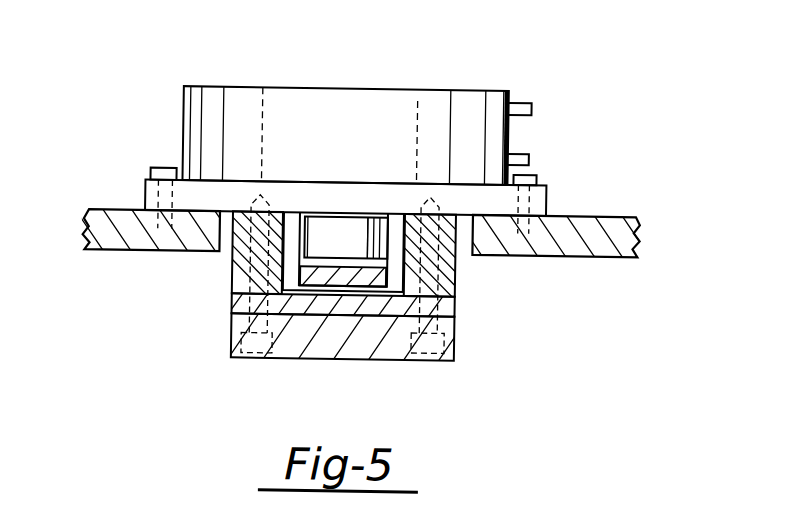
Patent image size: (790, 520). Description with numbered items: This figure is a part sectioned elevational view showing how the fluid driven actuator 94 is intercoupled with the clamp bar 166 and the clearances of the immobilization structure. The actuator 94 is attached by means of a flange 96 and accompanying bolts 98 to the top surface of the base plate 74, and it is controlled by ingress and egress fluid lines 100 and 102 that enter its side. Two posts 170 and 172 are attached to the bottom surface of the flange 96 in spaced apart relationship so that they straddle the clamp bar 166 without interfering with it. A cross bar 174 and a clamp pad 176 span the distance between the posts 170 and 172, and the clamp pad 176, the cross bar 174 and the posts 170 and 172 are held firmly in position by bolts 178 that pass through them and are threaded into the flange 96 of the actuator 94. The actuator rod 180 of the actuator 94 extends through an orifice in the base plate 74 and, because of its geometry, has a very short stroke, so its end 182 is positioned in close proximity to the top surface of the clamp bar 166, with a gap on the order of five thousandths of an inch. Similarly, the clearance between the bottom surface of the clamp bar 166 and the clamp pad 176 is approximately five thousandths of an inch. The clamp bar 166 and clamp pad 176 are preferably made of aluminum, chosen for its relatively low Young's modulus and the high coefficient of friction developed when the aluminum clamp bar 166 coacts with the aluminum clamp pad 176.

The base plate 74 is at (617, 213).
The fluid driven actuator 94 is at (261, 88).
The flange 96 is at (145, 200).
The bolts 98 is at (156, 170).
The ingress fluid line 100 is at (523, 100).
The egress fluid line 102 is at (529, 152).
The clamp bar 166 is at (459, 288).
The post 170 is at (459, 266).
The post 172 is at (234, 276).
The cross bar 174 is at (350, 359).
The clamp pad 176 is at (234, 308).
The bolts 178 is at (259, 360).
The actuator rod 180 is at (354, 248).
The end of actuator rod 182 is at (362, 258).